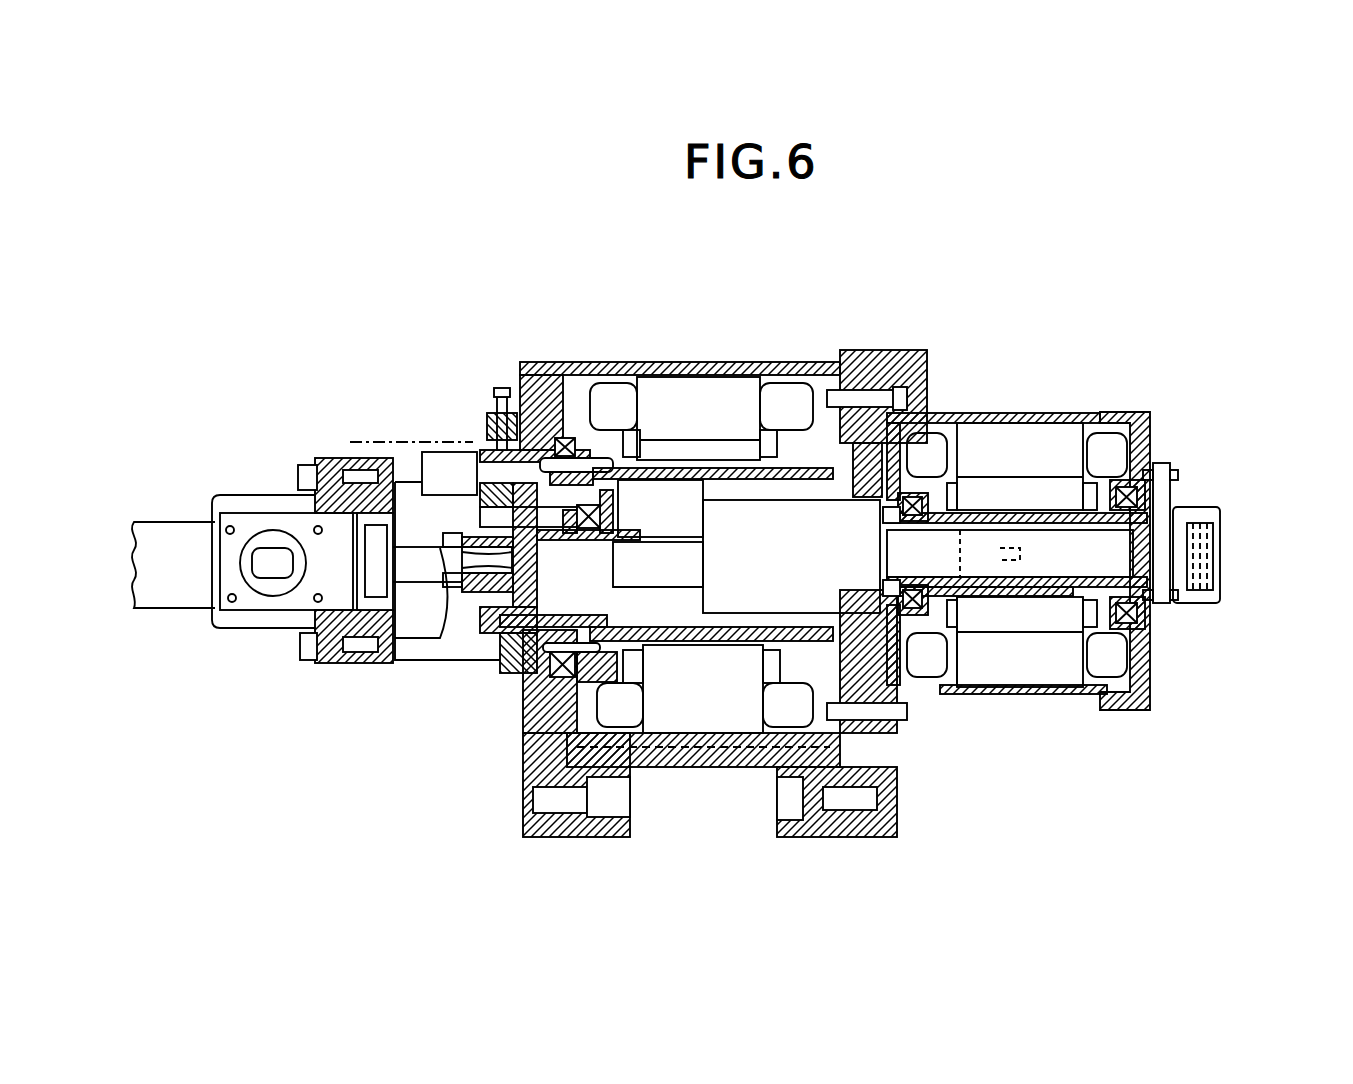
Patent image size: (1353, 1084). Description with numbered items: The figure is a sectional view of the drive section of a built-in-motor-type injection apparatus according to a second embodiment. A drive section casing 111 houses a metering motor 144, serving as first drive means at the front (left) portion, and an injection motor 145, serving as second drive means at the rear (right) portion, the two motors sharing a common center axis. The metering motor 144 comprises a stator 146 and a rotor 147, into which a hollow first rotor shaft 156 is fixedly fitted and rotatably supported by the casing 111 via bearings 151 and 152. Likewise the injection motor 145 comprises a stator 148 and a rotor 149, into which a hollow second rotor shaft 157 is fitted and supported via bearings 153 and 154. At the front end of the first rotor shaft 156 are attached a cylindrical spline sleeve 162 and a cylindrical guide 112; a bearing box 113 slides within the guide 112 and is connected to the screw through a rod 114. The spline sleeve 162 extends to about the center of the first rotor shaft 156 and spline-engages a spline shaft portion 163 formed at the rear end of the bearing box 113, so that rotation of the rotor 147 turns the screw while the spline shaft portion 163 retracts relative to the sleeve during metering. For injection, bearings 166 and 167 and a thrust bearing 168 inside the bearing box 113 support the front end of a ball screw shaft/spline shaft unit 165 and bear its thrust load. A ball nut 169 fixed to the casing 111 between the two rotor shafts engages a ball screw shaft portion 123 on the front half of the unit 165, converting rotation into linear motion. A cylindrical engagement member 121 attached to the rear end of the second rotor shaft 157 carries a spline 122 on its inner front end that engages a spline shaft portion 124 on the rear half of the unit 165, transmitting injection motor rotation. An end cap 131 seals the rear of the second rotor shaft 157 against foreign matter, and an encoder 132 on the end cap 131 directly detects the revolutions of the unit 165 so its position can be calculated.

The drive section casing 111 is at (910, 350).
The guide 112 is at (512, 655).
The bearing box 113 is at (470, 612).
The rod 114 is at (418, 565).
The engagement member 121 is at (1066, 597).
The spline 122 is at (1147, 590).
The ball screw shaft portion 123 is at (700, 468).
The spline shaft portion 124 is at (972, 597).
The end cap 131 is at (1160, 575).
The encoder 132 is at (1210, 573).
The metering motor 144 is at (730, 706).
The injection motor 145 is at (1033, 651).
The stator 146 is at (678, 392).
The rotor 147 is at (697, 437).
The stator 148 is at (1030, 447).
The rotor 149 is at (985, 497).
The bearing 151 is at (580, 430).
The bearing 152 is at (823, 362).
The bearing 153 is at (933, 490).
The bearing 154 is at (1120, 480).
The first rotor shaft 156 is at (687, 513).
The second rotor shaft 157 is at (1043, 527).
The spline sleeve 162 is at (665, 643).
The spline shaft portion 163 is at (613, 620).
The ball screw shaft/spline shaft unit 165 is at (680, 567).
The bearing 166 is at (430, 552).
The bearing 167 is at (660, 440).
The thrust bearing 168 is at (618, 650).
The ball nut 169 is at (813, 567).